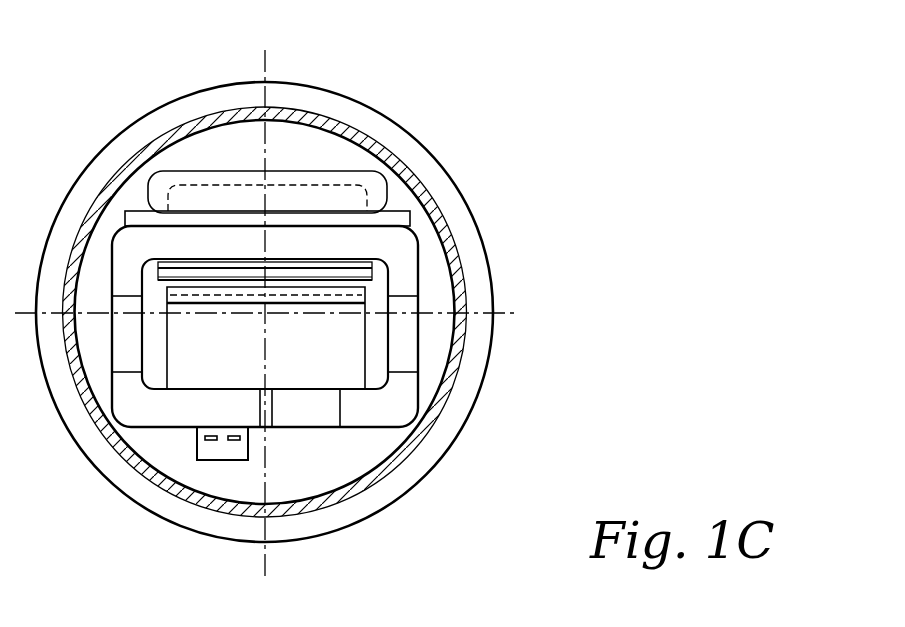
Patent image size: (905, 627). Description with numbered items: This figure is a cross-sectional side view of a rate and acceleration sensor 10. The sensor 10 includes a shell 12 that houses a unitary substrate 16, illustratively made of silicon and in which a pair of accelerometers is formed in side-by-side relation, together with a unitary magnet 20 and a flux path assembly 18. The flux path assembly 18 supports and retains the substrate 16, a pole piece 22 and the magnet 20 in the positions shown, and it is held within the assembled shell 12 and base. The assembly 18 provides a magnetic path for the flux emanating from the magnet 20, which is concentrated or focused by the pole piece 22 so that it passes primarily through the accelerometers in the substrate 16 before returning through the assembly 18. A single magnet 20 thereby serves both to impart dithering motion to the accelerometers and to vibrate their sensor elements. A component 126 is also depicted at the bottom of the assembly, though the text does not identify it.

The rate and acceleration sensor 10 is at (146, 94).
The shell 12 is at (317, 523).
The unitary substrate 16 is at (380, 268).
The flux path assembly 18 is at (392, 410).
The unitary magnet 20 is at (350, 355).
The pole piece 22 is at (357, 290).
The connector plug 126 is at (226, 452).